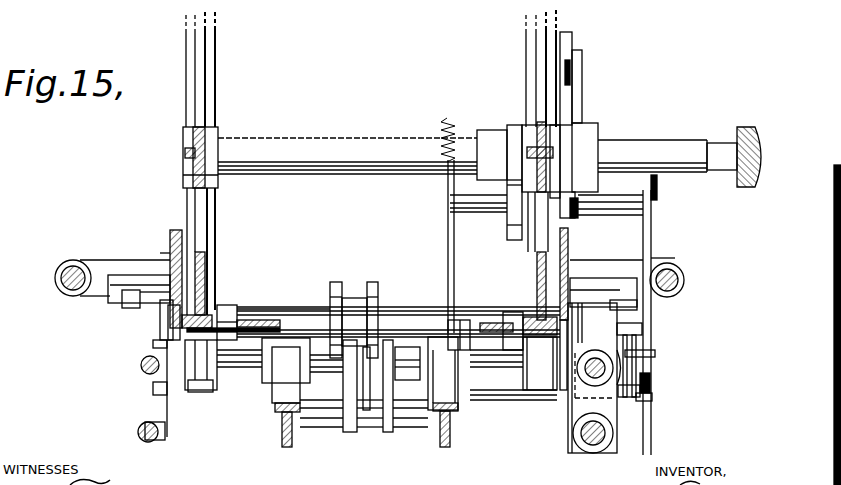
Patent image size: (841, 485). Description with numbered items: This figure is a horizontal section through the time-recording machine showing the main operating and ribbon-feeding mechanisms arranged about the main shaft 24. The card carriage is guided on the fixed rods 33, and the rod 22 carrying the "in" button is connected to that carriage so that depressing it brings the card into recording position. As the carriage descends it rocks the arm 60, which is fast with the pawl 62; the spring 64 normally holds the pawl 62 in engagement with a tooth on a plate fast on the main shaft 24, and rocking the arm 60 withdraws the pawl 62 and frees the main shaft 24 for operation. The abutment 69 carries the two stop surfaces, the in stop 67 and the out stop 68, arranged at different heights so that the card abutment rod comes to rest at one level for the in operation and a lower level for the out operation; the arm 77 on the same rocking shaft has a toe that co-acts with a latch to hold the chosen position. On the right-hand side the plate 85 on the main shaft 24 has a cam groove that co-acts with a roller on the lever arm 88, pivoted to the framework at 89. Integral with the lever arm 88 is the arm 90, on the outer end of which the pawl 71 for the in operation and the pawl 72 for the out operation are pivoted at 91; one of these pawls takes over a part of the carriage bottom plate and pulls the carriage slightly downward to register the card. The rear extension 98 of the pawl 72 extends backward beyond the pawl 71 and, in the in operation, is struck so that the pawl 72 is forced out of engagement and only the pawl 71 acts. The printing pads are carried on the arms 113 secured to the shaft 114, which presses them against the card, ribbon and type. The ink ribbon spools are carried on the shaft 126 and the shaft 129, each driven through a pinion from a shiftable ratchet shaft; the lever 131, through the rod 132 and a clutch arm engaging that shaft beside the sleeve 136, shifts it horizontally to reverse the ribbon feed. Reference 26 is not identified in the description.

The rod 22 is at (152, 442).
The main shaft 24 is at (348, 155).
The shaft 26 is at (600, 440).
The fixed rods 33 is at (141, 366).
The arm 60 is at (447, 273).
The pawl 62 is at (507, 232).
The spring 64 is at (446, 124).
The in stop 67 is at (370, 292).
The out stop 68 is at (330, 310).
The abutment 69 is at (373, 328).
The pawl 71 is at (636, 368).
The pawl 72 is at (652, 381).
The arm 77 is at (578, 337).
The plate 85 is at (567, 38).
The lever arm 88 is at (580, 90).
The pivot 89 is at (657, 188).
The arm 90 is at (652, 236).
The pivot 91 is at (652, 392).
The rear extension 98 is at (657, 353).
The arms 113 is at (292, 440).
The shaft 114 is at (240, 355).
The shaft 126 is at (684, 276).
The shaft 129 is at (78, 268).
The lever 131 is at (108, 306).
The rod 132 is at (255, 306).
The sleeve 136 is at (640, 308).